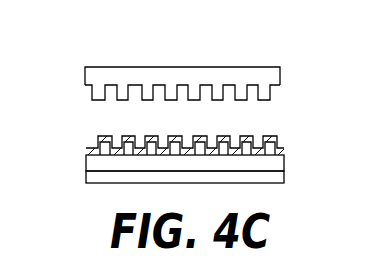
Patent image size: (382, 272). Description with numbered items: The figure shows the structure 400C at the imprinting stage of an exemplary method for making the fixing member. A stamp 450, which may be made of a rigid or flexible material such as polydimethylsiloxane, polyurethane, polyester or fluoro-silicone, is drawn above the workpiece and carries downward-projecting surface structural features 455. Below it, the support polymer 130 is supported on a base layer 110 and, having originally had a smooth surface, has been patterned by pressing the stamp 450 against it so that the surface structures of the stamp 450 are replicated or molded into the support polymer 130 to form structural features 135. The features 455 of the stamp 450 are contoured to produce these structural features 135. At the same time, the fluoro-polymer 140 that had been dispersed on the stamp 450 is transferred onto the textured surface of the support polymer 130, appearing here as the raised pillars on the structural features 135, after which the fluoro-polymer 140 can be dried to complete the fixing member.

The structure 400C is at (127, 46).
The stamp 450 is at (181, 77).
The structural features 455 is at (270, 100).
The substrate 110 is at (284, 177).
The support polymer 130 is at (86, 162).
The fluoro-polymer 140 is at (98, 137).
The structural features 135 is at (268, 147).